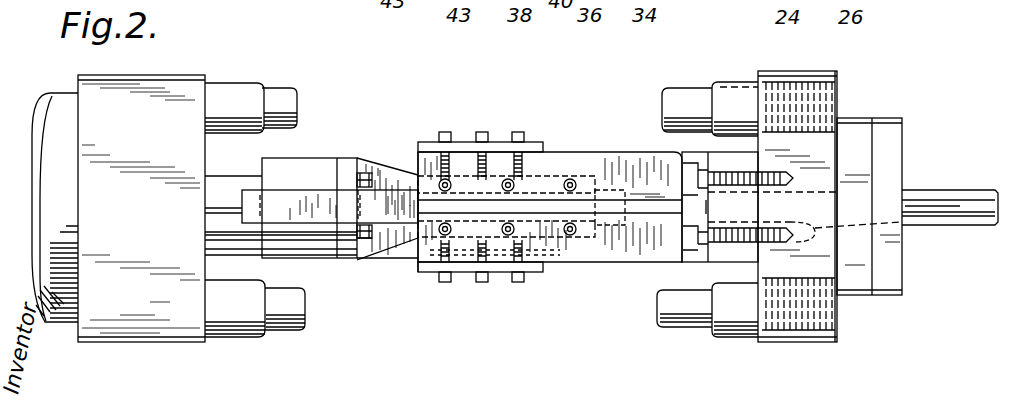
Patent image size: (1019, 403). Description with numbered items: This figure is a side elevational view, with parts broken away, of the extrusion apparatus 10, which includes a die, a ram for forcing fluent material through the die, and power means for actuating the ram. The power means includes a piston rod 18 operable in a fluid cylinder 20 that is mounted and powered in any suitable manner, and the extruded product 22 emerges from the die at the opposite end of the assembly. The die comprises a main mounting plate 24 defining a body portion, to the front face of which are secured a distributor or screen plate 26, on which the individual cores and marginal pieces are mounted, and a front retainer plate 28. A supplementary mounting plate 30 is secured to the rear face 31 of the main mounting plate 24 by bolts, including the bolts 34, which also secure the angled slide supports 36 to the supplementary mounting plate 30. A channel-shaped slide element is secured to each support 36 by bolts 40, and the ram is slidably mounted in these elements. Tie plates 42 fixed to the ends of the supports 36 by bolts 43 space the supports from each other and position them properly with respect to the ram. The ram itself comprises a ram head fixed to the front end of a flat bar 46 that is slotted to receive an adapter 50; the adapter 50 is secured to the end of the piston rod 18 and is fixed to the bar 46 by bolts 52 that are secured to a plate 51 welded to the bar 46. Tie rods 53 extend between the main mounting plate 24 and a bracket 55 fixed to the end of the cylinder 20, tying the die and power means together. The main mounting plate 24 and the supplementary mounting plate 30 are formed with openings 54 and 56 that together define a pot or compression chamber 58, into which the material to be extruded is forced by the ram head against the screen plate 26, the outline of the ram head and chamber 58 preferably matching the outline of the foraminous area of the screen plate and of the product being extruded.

The apparatus 10 is at (447, 306).
The piston rod 18 is at (223, 180).
The fluid cylinder 20 is at (72, 323).
The extruded product 22 is at (959, 236).
The main mounting plate 24 is at (808, 72).
The screen plate 26 is at (850, 116).
The front retainer plate 28 is at (903, 170).
The supplementary mounting plate 30 is at (720, 267).
The rear face 31 is at (758, 72).
The bolts 34 is at (683, 170).
The angled slide supports 36 is at (609, 210).
The bolts 40 is at (570, 183).
The tie plates 42 is at (498, 142).
The bolts 43 is at (473, 134).
The flat bar 46 is at (400, 225).
The adapter 50 is at (307, 167).
The plate 51 is at (343, 160).
The bolts 52 is at (367, 177).
The tie rods 53 is at (246, 84).
The opening 54 is at (718, 206).
The bracket 55 is at (148, 76).
The opening 56 is at (845, 247).
The compression chamber 58 is at (700, 203).